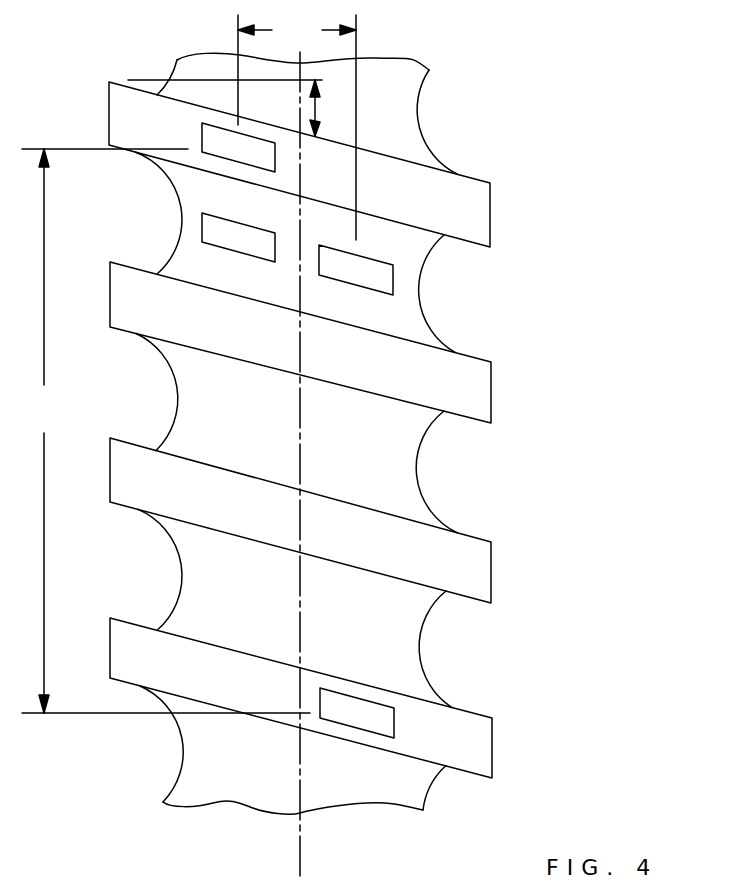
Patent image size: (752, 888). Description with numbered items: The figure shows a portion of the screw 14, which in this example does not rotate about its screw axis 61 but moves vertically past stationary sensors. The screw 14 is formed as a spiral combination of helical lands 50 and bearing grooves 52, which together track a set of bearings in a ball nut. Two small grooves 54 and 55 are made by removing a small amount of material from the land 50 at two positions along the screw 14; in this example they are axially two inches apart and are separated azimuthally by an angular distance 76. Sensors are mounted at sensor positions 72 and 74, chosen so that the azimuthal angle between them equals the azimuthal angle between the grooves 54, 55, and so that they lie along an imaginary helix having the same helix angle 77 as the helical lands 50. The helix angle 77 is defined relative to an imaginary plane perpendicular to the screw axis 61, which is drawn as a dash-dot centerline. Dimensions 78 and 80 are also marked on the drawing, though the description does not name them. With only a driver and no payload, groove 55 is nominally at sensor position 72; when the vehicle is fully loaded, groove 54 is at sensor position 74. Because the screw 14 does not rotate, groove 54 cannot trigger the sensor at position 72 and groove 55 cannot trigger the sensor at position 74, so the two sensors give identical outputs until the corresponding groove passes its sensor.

The screw 14 is at (424, 130).
The land 50 is at (491, 210).
The bearing groove 52 is at (428, 493).
The small groove 54 is at (223, 142).
The small groove 55 is at (387, 690).
The screw axis 61 is at (303, 852).
The sensor position 72 is at (383, 278).
The sensor position 74 is at (218, 235).
The angular distance 76 is at (297, 127).
The helix angle 77 is at (317, 107).
The length dimension 78 is at (166, 431).
The pitch 80 is at (121, 872).